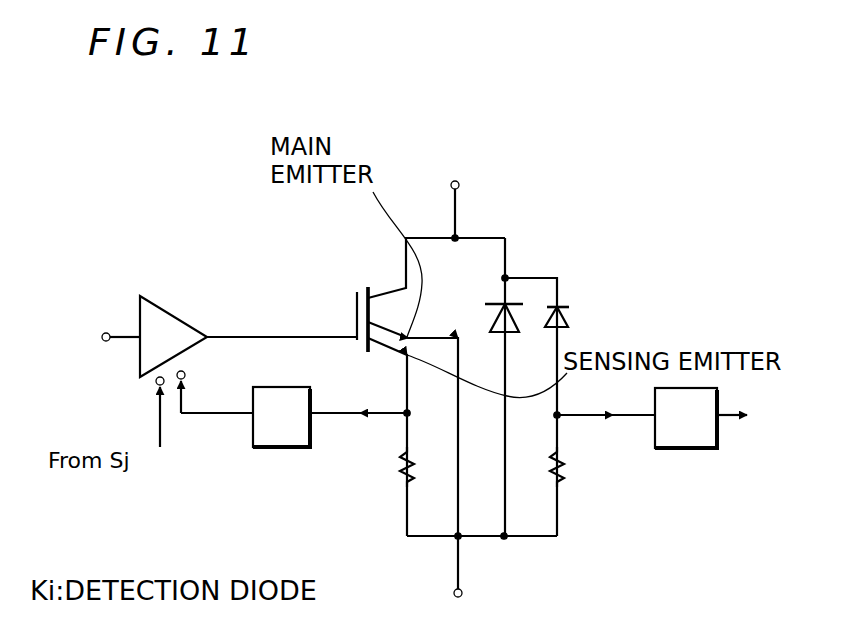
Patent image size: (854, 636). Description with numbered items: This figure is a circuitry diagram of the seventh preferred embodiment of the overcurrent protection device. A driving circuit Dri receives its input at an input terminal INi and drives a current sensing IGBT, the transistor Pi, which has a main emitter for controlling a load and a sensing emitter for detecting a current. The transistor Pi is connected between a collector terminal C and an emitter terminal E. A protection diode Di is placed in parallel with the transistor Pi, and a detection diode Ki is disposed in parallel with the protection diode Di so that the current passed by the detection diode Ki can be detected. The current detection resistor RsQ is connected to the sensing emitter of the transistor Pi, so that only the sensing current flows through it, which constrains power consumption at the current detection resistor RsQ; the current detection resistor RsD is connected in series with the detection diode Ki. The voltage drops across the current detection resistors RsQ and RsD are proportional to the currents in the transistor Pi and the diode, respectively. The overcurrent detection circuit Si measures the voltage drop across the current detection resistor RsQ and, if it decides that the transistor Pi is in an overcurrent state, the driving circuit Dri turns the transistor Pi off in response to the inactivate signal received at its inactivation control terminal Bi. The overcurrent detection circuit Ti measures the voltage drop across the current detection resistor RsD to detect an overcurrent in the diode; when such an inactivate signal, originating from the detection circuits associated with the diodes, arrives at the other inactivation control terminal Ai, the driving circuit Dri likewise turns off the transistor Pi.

The driving circuit Dri is at (157, 303).
The input terminal INi is at (106, 319).
The inactivation control terminal Ai is at (157, 379).
The inactivation control terminal Bi is at (185, 372).
The overcurrent detection circuit Si is at (277, 448).
The current sensing IGBT Pi is at (387, 285).
The collector terminal C is at (466, 203).
The emitter terminal E is at (470, 571).
The protection diode Di is at (517, 297).
The detection diode Ki is at (565, 308).
The current detection resistor RsQ is at (402, 482).
The current detection resistor RsD is at (565, 477).
The overcurrent detection circuit Ti is at (693, 432).